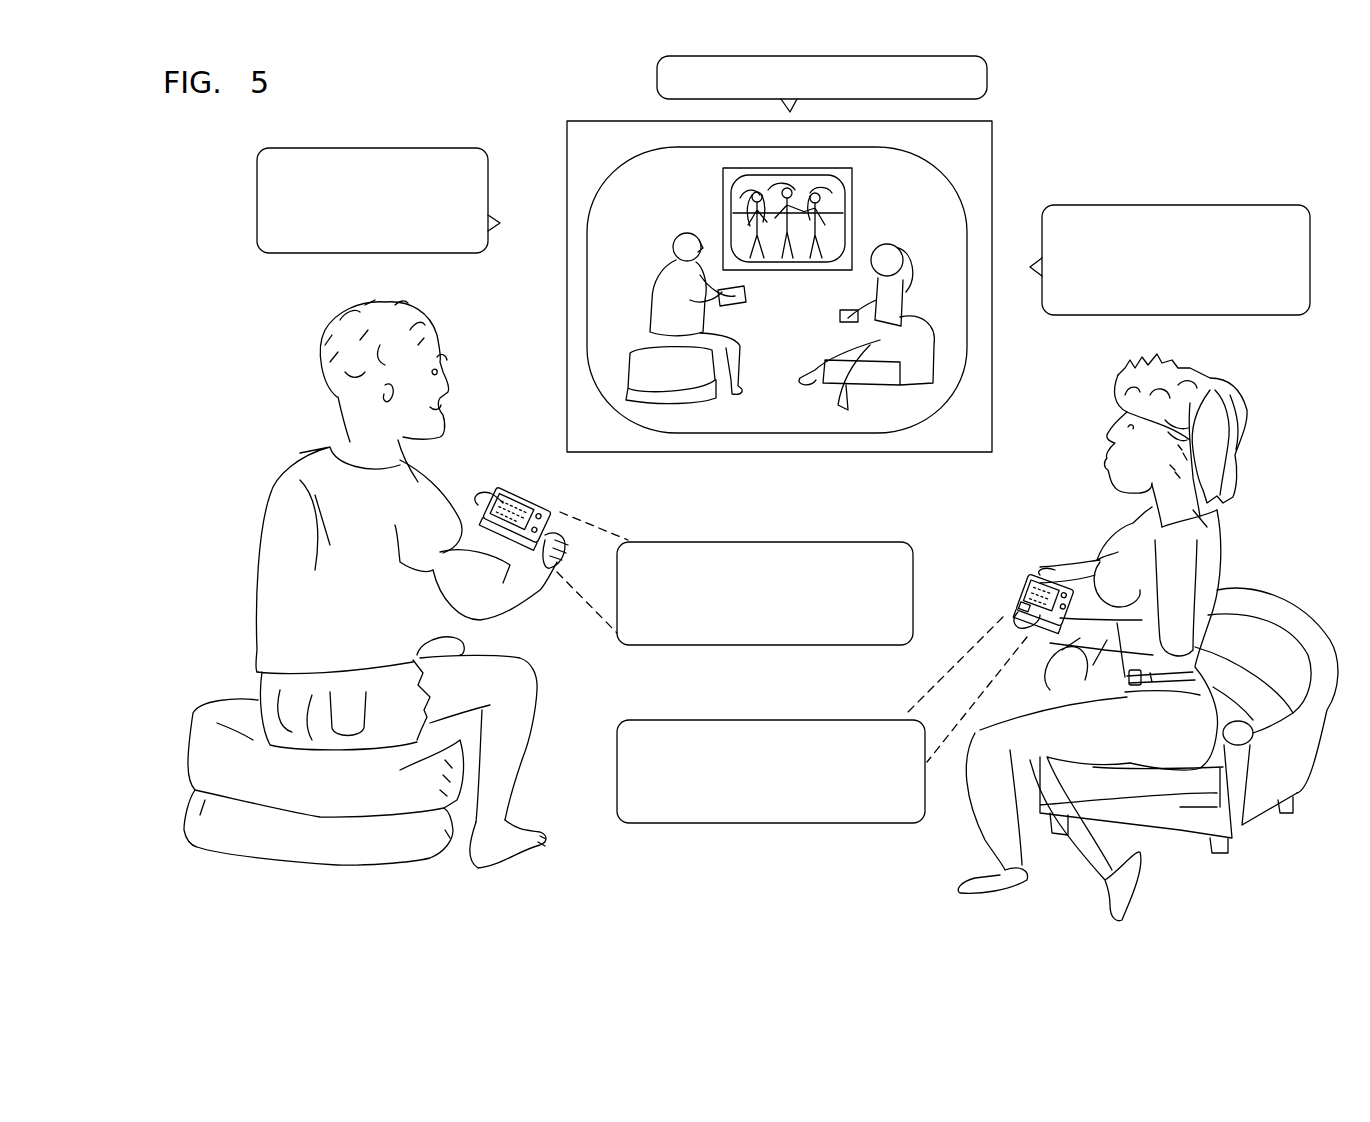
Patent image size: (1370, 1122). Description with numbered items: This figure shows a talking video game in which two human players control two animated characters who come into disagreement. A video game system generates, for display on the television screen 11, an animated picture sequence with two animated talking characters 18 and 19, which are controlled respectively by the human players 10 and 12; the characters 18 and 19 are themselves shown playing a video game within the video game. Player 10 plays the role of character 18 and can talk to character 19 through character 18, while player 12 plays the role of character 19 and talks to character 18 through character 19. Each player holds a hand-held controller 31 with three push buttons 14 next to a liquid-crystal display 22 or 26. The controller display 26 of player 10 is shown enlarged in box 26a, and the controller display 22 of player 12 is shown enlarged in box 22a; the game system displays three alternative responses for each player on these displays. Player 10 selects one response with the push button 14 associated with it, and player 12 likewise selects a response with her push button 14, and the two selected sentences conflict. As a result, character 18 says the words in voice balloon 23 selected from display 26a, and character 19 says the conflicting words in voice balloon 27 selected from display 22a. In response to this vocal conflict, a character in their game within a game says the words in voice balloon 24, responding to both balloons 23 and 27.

The human player 10 is at (270, 497).
The television screen 11 is at (942, 188).
The human player 12 is at (1212, 577).
The push button 14 is at (548, 520).
The animated talking character 18 is at (722, 400).
The animated talking character 19 is at (836, 412).
The liquid-crystal display 22 is at (1038, 598).
The box 22a is at (718, 813).
The voice balloon 23 is at (298, 245).
The voice balloon 24 is at (990, 92).
The liquid-crystal display 26 is at (515, 500).
The box 26a is at (867, 552).
The voice balloon 27 is at (1234, 312).
The hand-held controller 31 is at (1015, 607).